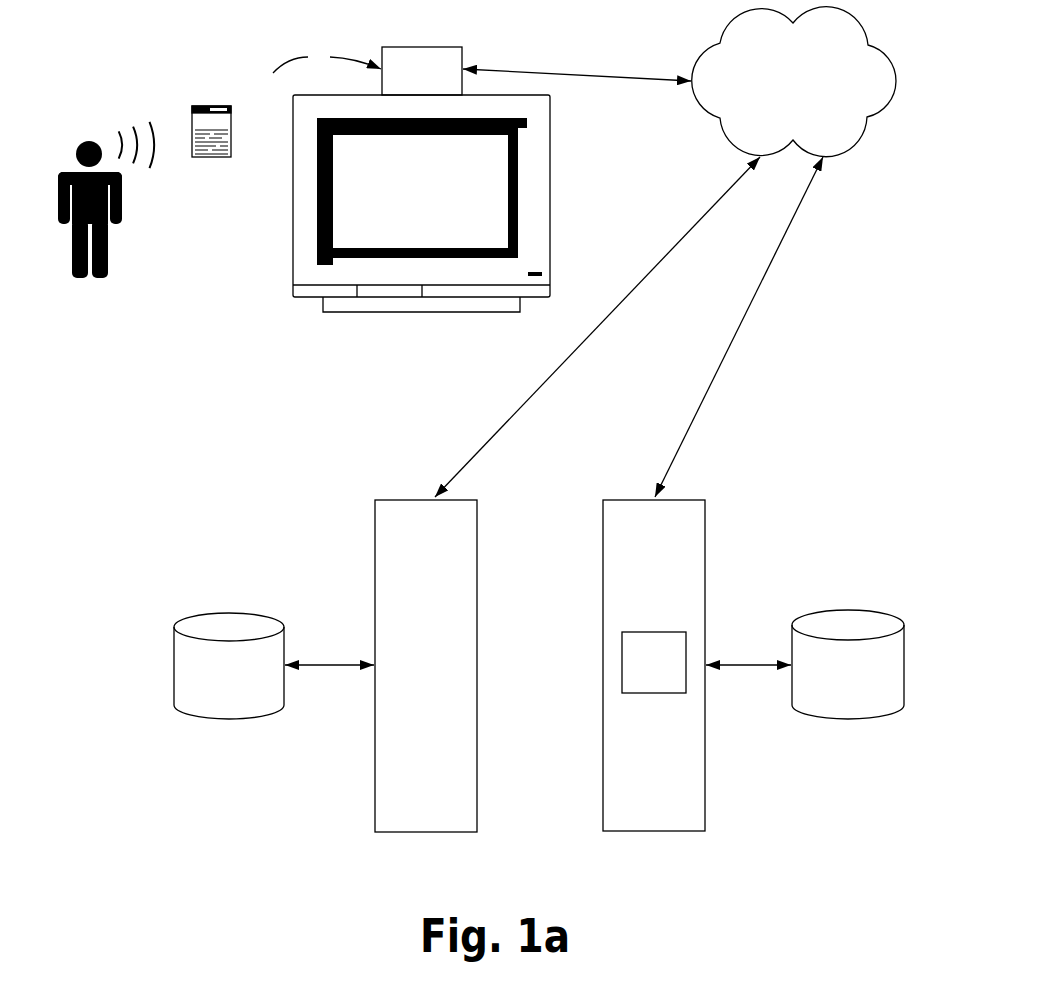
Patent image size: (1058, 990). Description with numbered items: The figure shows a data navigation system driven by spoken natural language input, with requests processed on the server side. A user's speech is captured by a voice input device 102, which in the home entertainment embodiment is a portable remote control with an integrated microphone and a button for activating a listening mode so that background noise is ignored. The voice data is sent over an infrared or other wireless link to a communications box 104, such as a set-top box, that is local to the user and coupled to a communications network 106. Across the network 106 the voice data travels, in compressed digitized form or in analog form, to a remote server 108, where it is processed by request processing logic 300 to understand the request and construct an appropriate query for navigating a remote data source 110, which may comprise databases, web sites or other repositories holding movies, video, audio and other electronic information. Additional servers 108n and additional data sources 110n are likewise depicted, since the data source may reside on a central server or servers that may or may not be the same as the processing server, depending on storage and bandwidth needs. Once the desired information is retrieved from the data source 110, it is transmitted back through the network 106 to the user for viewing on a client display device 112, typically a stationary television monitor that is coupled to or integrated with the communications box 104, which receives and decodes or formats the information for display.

The voice input device 102 is at (260, 88).
The communications box 104 is at (446, 37).
The communications network 106 is at (816, 117).
The remote server 108 is at (759, 514).
The remote server 108n is at (551, 721).
The data source 110 is at (914, 608).
The data source 110n is at (163, 682).
The client display device 112 is at (606, 212).
The request processing logic 300 is at (686, 632).